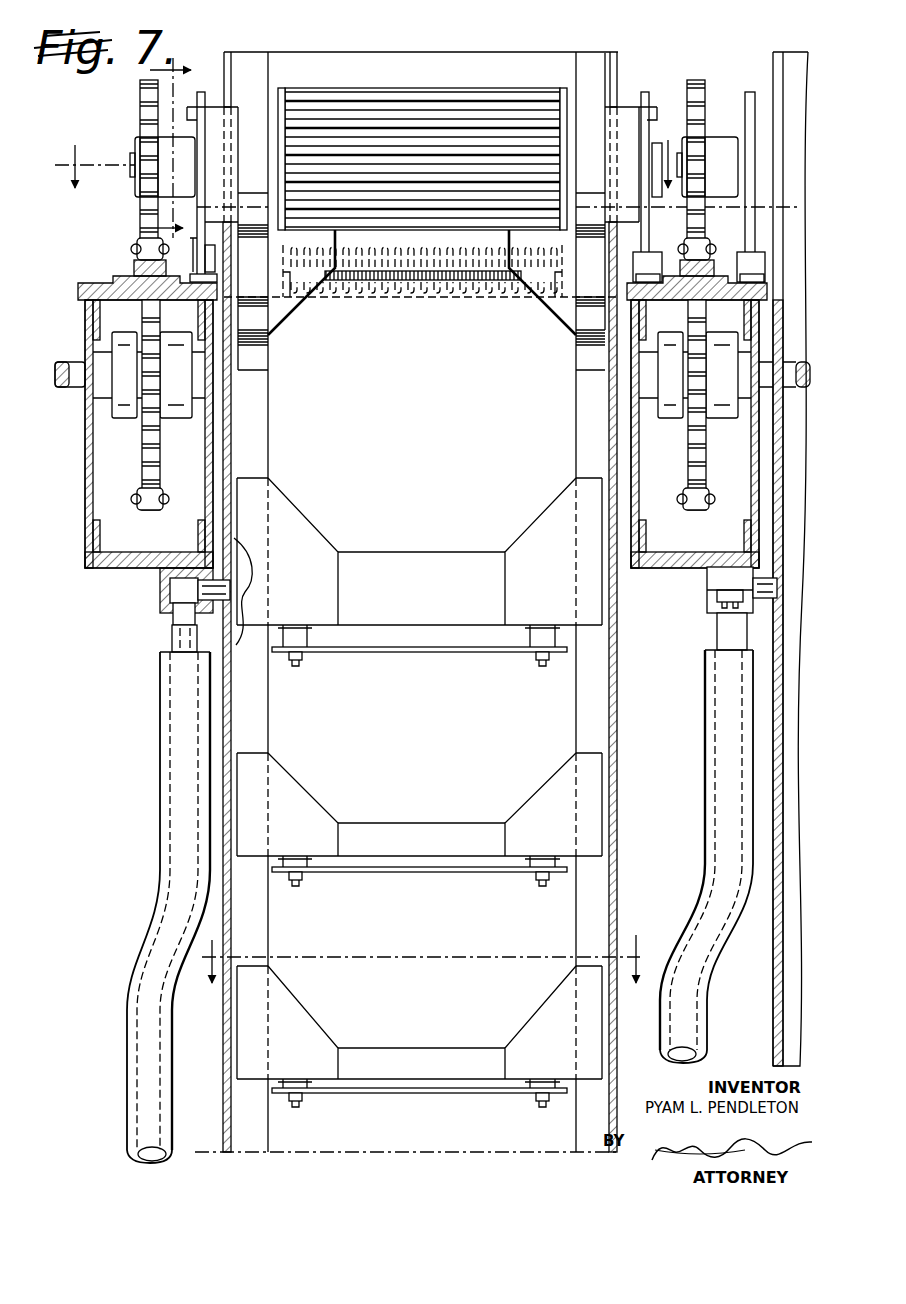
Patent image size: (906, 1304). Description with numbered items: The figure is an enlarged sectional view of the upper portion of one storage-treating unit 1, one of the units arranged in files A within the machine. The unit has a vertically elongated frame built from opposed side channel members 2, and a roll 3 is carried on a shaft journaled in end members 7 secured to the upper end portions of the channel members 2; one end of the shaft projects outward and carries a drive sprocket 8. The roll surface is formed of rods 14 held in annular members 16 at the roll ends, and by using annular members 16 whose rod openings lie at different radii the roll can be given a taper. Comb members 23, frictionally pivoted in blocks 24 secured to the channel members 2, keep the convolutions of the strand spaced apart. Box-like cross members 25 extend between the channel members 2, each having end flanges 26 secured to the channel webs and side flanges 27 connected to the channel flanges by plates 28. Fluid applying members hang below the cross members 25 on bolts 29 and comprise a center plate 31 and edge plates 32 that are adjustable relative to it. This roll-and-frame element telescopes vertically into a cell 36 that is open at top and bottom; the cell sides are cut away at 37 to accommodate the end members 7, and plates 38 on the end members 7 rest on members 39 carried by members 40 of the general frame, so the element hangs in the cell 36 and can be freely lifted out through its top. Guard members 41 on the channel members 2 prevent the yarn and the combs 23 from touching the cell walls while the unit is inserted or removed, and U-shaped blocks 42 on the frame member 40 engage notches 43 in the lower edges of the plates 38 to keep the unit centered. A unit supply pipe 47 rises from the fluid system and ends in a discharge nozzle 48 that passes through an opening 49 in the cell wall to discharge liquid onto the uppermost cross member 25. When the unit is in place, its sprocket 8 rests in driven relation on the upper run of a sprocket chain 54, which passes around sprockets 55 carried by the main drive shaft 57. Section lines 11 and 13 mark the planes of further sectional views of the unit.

The storage treating unit 1 is at (486, 50).
The side channel members 2 is at (266, 412).
The roll 3 is at (381, 86).
The end members 7 is at (218, 160).
The drive sprocket 8 is at (148, 118).
The section line 11 is at (369, 151).
The section line 13 is at (434, 953).
The rods 14 is at (180, 155).
The annular members 16 is at (283, 88).
The comb members 23 is at (428, 302).
The blocks 24 is at (284, 318).
The box-like cross members 25 is at (377, 630).
The end flanges 26 is at (236, 614).
The side flanges 27 is at (430, 558).
The plates 28 is at (294, 523).
The bolts 29 is at (297, 666).
The center plate 31 is at (403, 653).
The edge plates 32 is at (460, 646).
The cell 36 is at (660, 226).
The cut-away portions 37 is at (229, 72).
The plates 38 is at (206, 100).
The supporting members 39 is at (217, 279).
The frame members 40 is at (98, 292).
The guard members 41 is at (271, 313).
The U-shaped blocks 42 is at (212, 263).
The notches 43 is at (201, 246).
The unit supply pipes 47 is at (180, 847).
The discharge nozzles 48 is at (229, 591).
The openings 49 is at (231, 556).
The sprocket chain 54 is at (136, 248).
The sprockets 55 is at (145, 455).
The main drive shaft 57 is at (80, 358).
The files A is at (146, 724).